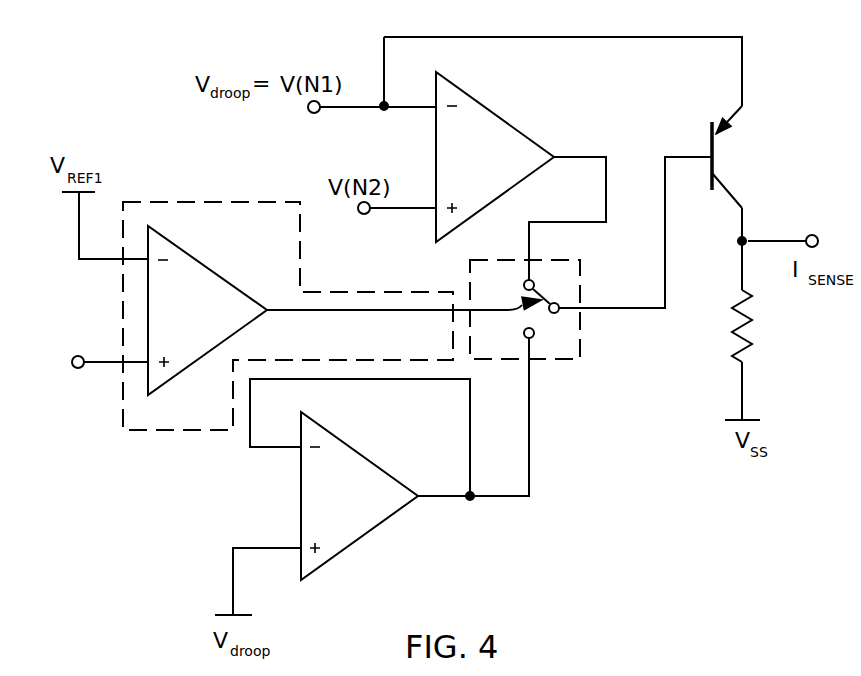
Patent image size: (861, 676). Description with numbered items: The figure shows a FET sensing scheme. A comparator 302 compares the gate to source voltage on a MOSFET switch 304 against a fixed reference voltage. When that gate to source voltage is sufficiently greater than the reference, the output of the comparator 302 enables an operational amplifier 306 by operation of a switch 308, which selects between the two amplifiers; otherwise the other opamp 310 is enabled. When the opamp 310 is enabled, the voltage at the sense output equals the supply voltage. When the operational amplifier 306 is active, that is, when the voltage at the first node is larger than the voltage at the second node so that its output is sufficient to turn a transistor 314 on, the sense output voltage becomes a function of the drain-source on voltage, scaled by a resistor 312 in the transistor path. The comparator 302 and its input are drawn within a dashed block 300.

The droop control circuit (dashed block) 300 is at (175, 201).
The comparator 302 is at (213, 321).
The MOSFET switch 304 is at (80, 377).
The operational amplifier 306 is at (502, 168).
The switch 308 is at (581, 347).
The opamp 310 is at (367, 509).
The resistor 312 is at (763, 328).
The transistor 314 is at (725, 157).